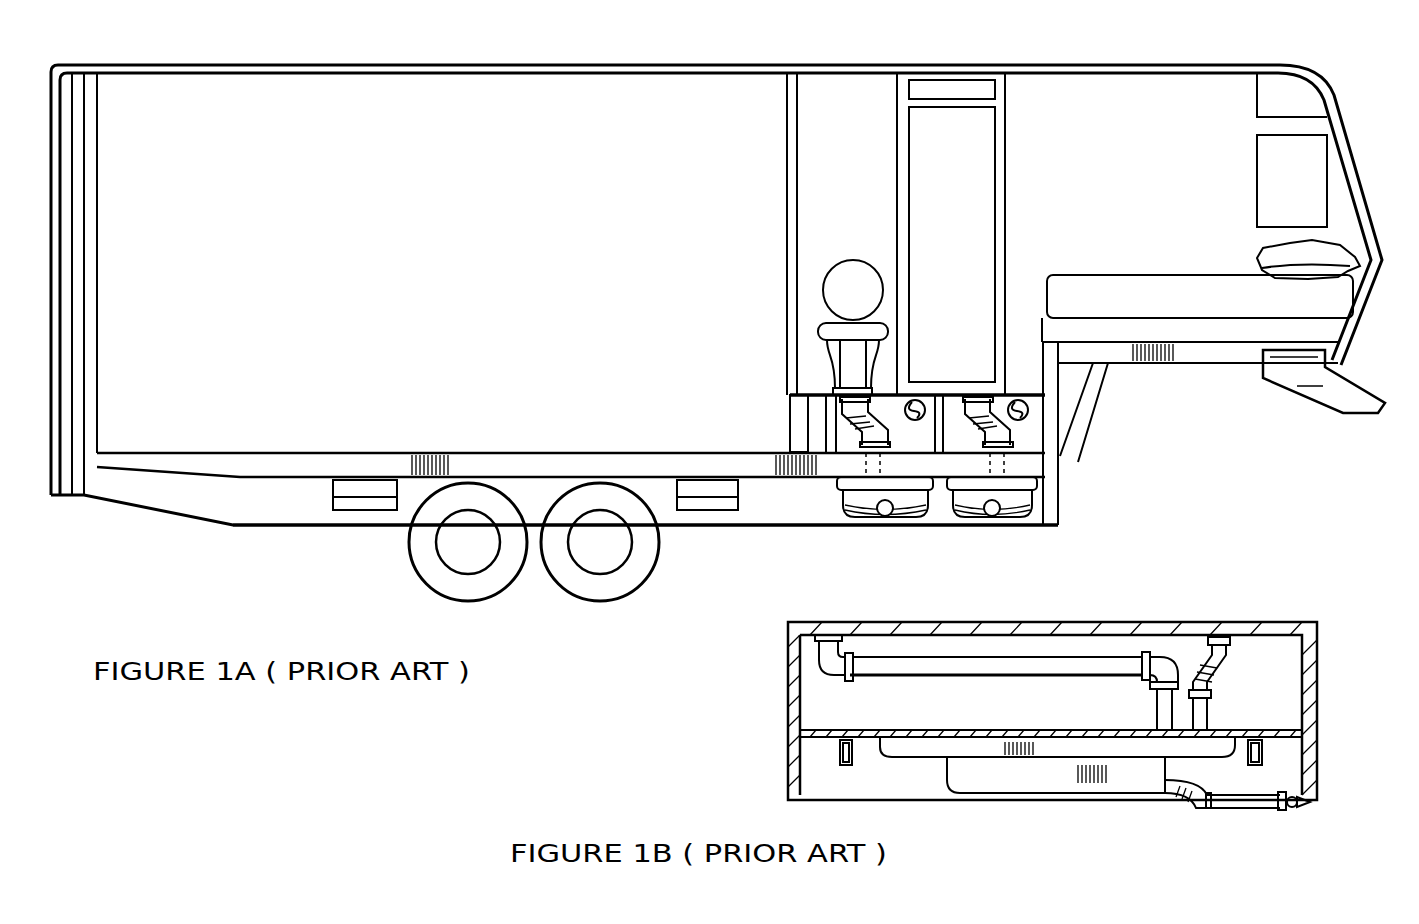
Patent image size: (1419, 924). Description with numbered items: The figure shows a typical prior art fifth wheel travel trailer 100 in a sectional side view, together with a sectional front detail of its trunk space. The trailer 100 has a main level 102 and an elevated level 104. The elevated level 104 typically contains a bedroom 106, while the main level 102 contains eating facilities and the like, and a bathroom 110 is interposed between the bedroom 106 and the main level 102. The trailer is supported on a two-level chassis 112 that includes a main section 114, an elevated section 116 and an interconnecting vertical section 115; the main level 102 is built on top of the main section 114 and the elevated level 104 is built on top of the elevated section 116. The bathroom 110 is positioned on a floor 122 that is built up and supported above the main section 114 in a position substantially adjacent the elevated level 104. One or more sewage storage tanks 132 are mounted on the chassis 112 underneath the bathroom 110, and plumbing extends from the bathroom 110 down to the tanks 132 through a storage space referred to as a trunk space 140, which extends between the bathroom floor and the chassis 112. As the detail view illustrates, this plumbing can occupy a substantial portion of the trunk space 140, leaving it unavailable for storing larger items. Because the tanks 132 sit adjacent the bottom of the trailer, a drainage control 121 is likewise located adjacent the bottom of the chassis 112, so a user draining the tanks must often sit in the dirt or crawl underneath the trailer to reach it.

In FIG. 1A, the fifth wheel travel trailer 100 is at (637, 60).
In FIG. 1A, the main level 102 is at (385, 341).
In FIG. 1A, the elevated level 104 is at (1157, 176).
In FIG. 1A, the bedroom 106 is at (1148, 248).
In FIG. 1A, the bathroom 110 is at (862, 176).
In FIG. 1A, the chassis 112 is at (775, 480).
In FIG. 1B, the chassis 112 is at (840, 751).
In FIG. 1A, the main section 114 is at (548, 452).
In FIG. 1A, the vertical section 115 is at (1070, 445).
In FIG. 1A, the elevated section 116 is at (1200, 365).
In FIG. 1B, the drainage control 121 is at (1295, 806).
In FIG. 1A, the floor 122 is at (815, 393).
In FIG. 1A, the sewage storage tanks 132 is at (975, 517).
In FIG. 1B, the sewage storage tanks 132 is at (1070, 790).
In FIG. 1A, the trunk space 140 is at (1025, 433).
In FIG. 1B, the trunk space 140 is at (1034, 713).